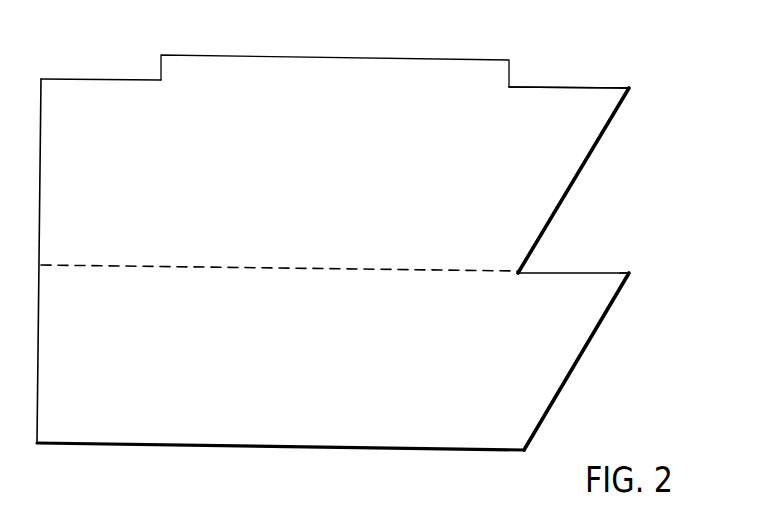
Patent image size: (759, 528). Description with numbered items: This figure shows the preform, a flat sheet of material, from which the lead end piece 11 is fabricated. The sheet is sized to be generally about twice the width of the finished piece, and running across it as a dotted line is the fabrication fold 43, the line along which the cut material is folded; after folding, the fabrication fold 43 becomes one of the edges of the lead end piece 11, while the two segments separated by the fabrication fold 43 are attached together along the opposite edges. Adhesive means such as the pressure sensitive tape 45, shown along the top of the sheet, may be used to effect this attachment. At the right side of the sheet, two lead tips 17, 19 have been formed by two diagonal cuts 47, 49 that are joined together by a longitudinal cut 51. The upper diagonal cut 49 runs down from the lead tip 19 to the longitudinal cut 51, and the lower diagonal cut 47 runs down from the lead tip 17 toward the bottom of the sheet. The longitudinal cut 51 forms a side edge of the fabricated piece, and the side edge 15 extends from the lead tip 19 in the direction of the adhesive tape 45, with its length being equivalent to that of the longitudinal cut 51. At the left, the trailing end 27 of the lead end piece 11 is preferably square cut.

The lead end piece 11 is at (127, 98).
The pressure sensitive tape 45 is at (313, 68).
The side edge 15 is at (578, 86).
The lead tip 19 is at (632, 88).
The diagonal cut 49 is at (571, 186).
The longitudinal cut 51 is at (562, 273).
The lead tip 17 is at (632, 272).
The diagonal cut 47 is at (573, 368).
The trailing end 27 is at (37, 422).
The fabrication fold 43 is at (168, 272).